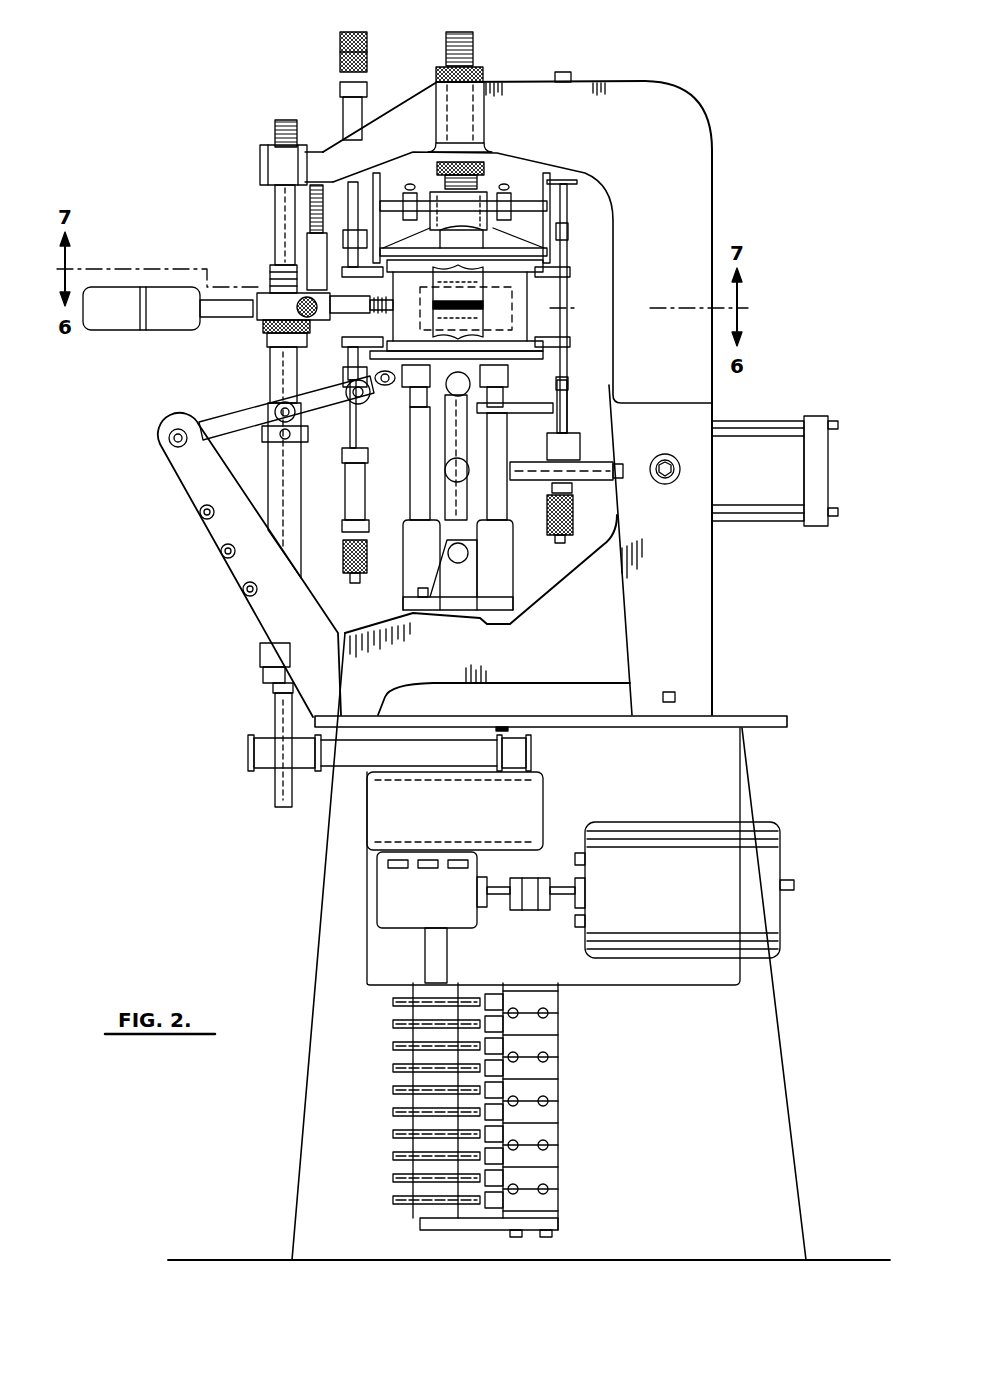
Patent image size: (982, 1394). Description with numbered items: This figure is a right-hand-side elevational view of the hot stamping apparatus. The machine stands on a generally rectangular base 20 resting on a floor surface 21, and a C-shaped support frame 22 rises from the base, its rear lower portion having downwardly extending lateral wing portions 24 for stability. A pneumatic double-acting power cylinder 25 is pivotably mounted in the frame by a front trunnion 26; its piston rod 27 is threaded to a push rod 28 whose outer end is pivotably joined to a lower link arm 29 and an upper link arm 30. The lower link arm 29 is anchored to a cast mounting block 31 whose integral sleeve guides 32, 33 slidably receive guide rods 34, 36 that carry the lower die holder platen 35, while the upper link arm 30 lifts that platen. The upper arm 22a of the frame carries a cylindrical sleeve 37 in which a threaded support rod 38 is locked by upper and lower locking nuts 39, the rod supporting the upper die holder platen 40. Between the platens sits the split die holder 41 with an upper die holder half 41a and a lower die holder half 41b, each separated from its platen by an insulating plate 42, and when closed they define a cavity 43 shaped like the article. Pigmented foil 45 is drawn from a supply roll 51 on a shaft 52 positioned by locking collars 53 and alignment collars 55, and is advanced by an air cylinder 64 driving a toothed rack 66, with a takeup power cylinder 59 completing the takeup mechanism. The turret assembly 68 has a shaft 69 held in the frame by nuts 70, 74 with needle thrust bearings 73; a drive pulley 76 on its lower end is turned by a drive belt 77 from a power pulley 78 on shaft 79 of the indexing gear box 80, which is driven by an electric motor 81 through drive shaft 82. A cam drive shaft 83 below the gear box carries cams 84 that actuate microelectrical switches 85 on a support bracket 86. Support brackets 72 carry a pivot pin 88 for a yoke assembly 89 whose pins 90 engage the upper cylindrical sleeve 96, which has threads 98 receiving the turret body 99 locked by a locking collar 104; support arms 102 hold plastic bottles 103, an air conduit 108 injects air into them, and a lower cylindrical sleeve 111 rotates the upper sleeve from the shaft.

The base 20 is at (770, 1062).
The floor surface 21 is at (835, 1260).
The support frame 22 is at (740, 116).
The upper arm of the support frame 22a is at (510, 96).
The lateral wing portions 24 is at (690, 604).
The power cylinder 25 is at (797, 418).
The front trunnion 26 is at (665, 485).
The piston rod 27 is at (615, 460).
The push rod 28 is at (527, 480).
The lower link arm 29 is at (455, 500).
The upper link arm 30 is at (455, 430).
The mounting block 31 is at (445, 583).
The sleeve guide 32 is at (420, 546).
The sleeve guide 33 is at (500, 568).
The guide rod 34 is at (418, 465).
The lower die holder platen 35 is at (370, 366).
The guide rod 36 is at (497, 456).
The cylindrical sleeve 37 is at (440, 117).
The threaded support rod 38 is at (475, 42).
The locking nuts 39 is at (437, 75).
The upper die holder platen 40 is at (510, 243).
The split die holder 41 is at (597, 303).
The upper die holder half 41a is at (520, 277).
The lower die holder half 41b is at (520, 341).
The insulating plate 42 is at (556, 268).
The cavity 43 is at (410, 296).
The pigmented foil 45 is at (470, 290).
The supply roll 51 is at (470, 205).
The shaft 52 is at (515, 205).
The locking collars 53 is at (410, 185).
The alignment collars 55 is at (445, 236).
The takeup power cylinder 59 is at (565, 482).
The air cylinder 64 is at (343, 106).
The toothed rack 66 is at (353, 205).
The turret assembly 68 is at (228, 375).
The shaft 69 is at (282, 222).
The nut 70 is at (275, 138).
The support brackets 72 is at (240, 566).
The needle thrust bearings 73 is at (265, 150).
The nut 74 is at (275, 688).
The drive pulley 76 is at (263, 772).
The drive belt 77 is at (430, 750).
The power pulley 78 is at (540, 768).
The shaft 79 is at (500, 727).
The indexing gear box 80 is at (530, 822).
The electric motor 81 is at (668, 848).
The drive shaft 82 is at (503, 898).
The cam drive shaft 83 is at (425, 952).
The cams 84 is at (393, 1003).
The microelectrical switches 85 is at (498, 1001).
The support bracket 86 is at (548, 1079).
The pivot pin 88 is at (172, 446).
The yoke assembly 89 is at (240, 432).
The pins 90 is at (308, 428).
The upper cylindrical sleeve 96 is at (283, 366).
The threads 98 is at (275, 268).
The turret body 99 is at (262, 297).
The support arm 102 is at (300, 308).
The plastic bottle 103 is at (125, 312).
The locking collar 104 is at (318, 322).
The air conduit 108 is at (312, 200).
The lower cylindrical sleeve 111 is at (285, 487).